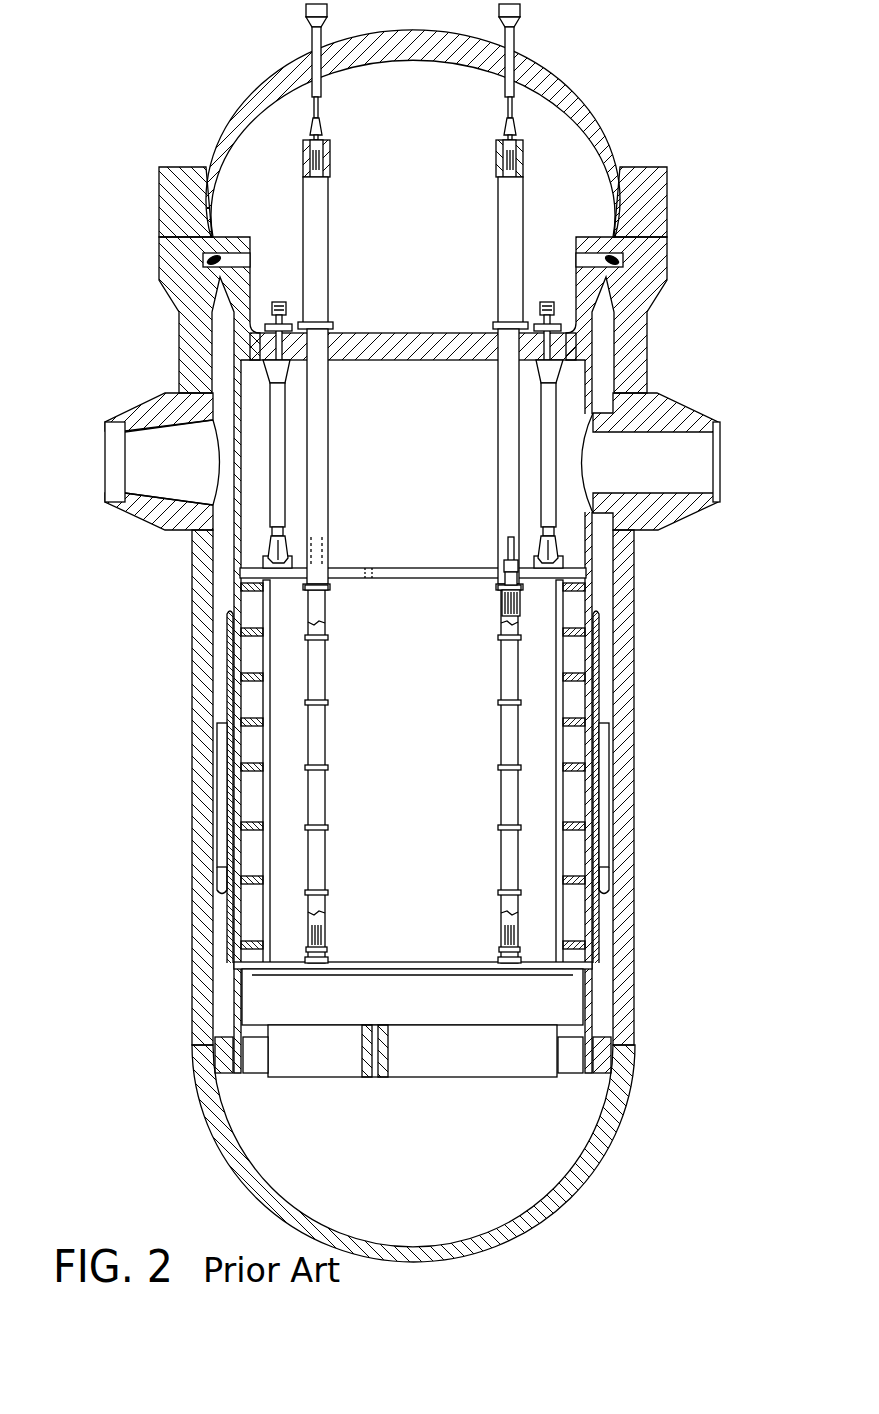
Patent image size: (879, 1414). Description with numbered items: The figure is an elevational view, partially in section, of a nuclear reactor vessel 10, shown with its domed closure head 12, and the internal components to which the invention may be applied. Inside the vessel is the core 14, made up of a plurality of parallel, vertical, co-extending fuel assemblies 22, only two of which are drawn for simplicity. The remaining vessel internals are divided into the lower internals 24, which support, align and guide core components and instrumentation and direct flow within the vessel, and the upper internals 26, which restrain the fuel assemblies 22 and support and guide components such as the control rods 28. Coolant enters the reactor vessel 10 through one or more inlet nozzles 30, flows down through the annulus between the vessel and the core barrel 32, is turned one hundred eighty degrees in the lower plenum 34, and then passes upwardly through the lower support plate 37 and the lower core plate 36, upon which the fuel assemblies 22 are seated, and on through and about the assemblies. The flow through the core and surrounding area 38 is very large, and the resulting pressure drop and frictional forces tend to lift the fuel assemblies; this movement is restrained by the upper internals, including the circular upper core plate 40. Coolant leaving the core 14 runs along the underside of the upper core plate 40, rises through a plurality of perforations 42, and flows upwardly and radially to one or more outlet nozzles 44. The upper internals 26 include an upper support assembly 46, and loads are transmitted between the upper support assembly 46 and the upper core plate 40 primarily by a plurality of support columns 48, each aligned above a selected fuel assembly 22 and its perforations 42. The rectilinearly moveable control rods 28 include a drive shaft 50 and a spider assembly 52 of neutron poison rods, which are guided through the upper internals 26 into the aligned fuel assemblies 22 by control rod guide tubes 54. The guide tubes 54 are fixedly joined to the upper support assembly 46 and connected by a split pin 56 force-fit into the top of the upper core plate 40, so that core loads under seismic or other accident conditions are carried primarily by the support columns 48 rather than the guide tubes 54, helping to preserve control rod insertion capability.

The reactor vessel 10 is at (637, 647).
The closure head 12 is at (665, 206).
The core 14 is at (433, 763).
The fuel assemblies 22 is at (328, 673).
The lower internals 24 is at (433, 1010).
The upper internals 26 is at (433, 438).
The control rods 28 is at (497, 578).
The inlet nozzles 30 is at (142, 393).
The core barrel 32 is at (228, 567).
The lower plenum 34 is at (578, 1128).
The lower core plate 36 is at (478, 963).
The lower support plate 37 is at (455, 1063).
The core and surrounding area 38 is at (468, 746).
The upper core plate 40 is at (453, 576).
The perforations 42 is at (372, 568).
The outlet nozzles 44 is at (688, 412).
The upper support assembly 46 is at (583, 237).
The support columns 48 is at (284, 460).
The drive shaft 50 is at (503, 542).
The spider assembly 52 is at (503, 567).
The control rod guide tubes 54 is at (326, 407).
The split pin 56 is at (520, 606).